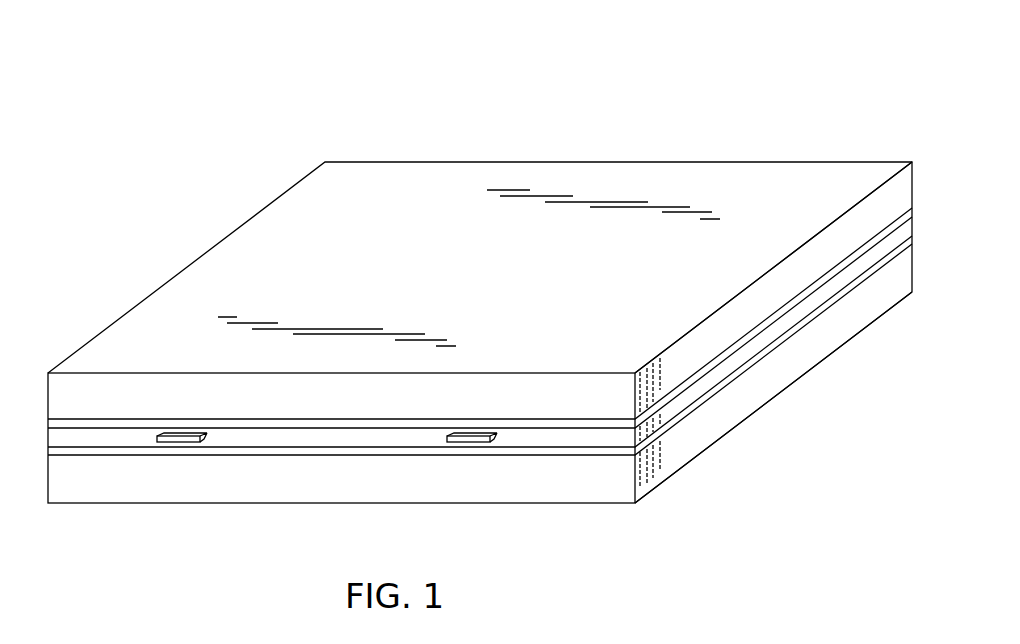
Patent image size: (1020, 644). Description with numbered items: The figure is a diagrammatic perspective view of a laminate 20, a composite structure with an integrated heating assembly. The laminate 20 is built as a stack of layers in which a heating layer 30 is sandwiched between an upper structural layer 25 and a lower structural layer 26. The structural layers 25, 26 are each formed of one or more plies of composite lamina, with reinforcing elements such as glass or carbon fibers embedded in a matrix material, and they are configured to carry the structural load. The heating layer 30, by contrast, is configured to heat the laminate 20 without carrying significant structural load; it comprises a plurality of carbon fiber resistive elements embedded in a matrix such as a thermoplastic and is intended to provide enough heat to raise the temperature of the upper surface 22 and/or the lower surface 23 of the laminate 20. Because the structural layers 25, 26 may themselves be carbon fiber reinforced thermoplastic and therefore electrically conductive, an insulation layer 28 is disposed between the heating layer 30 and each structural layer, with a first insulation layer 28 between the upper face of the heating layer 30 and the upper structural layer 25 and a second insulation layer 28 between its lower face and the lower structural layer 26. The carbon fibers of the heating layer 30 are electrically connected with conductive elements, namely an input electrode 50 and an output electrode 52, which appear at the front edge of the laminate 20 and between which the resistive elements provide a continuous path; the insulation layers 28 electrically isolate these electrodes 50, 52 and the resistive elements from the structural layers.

The laminate 20 is at (631, 100).
The upper surface 22 is at (418, 289).
The lower surface 23 is at (725, 369).
The upper structural layer 25 is at (83, 388).
The lower structural layer 26 is at (563, 490).
The insulation layer 28 is at (135, 422).
The heating layer 30 is at (103, 438).
The input electrode 50 is at (467, 447).
The output electrode 52 is at (188, 444).